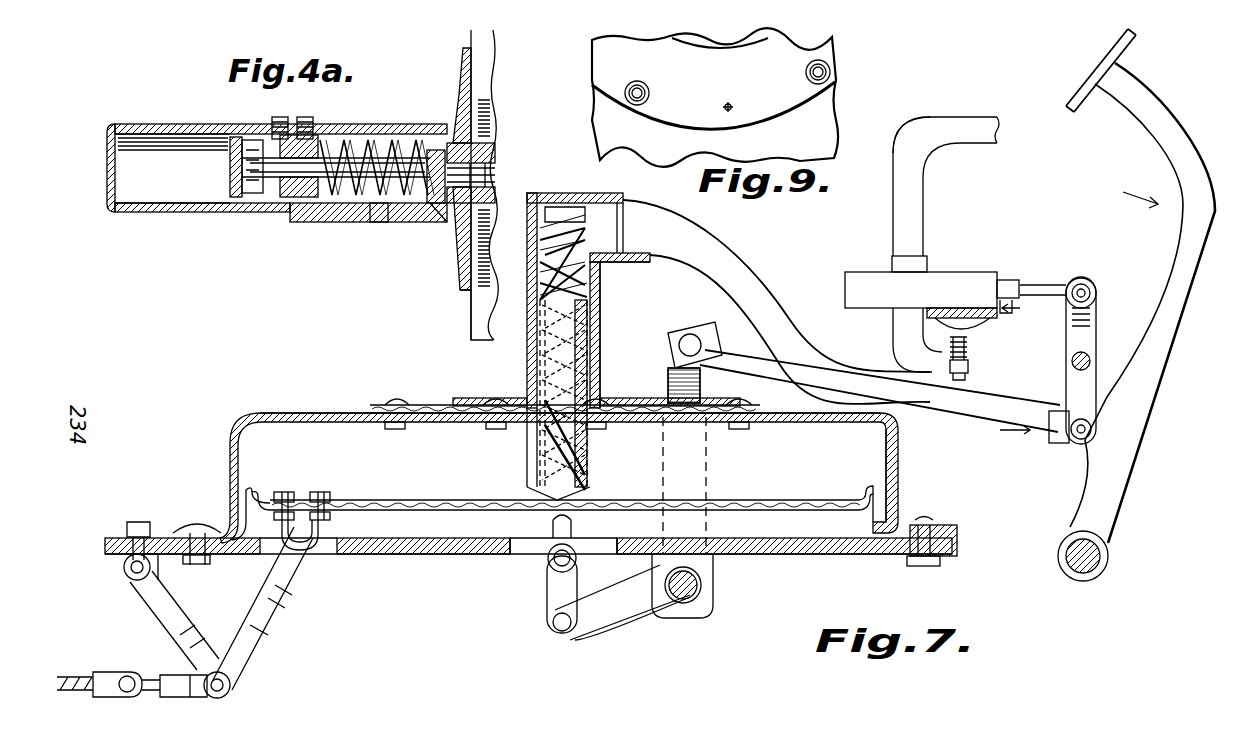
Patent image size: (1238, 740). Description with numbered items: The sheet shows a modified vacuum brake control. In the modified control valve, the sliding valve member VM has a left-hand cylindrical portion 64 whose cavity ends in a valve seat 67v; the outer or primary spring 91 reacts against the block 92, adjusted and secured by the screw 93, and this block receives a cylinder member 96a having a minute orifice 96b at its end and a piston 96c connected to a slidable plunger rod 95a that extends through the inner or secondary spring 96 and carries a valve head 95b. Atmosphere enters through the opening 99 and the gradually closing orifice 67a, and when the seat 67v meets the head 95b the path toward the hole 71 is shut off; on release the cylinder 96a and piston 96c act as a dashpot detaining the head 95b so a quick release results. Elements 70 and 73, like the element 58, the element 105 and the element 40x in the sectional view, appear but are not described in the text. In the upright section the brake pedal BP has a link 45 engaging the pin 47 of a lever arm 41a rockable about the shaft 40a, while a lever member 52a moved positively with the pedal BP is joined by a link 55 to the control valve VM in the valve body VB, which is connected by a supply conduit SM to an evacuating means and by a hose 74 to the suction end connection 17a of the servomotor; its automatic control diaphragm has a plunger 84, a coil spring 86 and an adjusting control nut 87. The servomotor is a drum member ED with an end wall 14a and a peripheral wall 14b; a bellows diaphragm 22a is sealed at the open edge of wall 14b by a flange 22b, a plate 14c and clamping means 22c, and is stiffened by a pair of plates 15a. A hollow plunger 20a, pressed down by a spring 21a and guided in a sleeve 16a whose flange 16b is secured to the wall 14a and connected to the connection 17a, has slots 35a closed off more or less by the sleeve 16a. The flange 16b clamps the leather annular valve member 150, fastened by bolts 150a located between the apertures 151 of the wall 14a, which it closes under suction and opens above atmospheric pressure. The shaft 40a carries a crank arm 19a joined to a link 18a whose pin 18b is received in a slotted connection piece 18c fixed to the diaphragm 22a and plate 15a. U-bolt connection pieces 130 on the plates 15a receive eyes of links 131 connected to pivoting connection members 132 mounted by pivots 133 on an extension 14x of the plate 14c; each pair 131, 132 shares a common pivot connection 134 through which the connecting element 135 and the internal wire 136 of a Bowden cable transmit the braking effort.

In FIG. 4A, the inner secondary spring 96 is at (340, 138).
In FIG. 4A, the cylinder member 96a is at (140, 130).
In FIG. 4A, the minute orifice 96b is at (110, 165).
In FIG. 4A, the piston 96c is at (222, 208).
In FIG. 4A, the setscrew 93 is at (282, 118).
In FIG. 4A, the hollow reaction nut 92 is at (306, 135).
In FIG. 4A, the slidable plunger rod 95a is at (285, 178).
In FIG. 4A, the first coil spring 91 is at (435, 150).
In FIG. 4A, the opening 99 is at (352, 220).
In FIG. 4A, the valve head 95b is at (392, 220).
In FIG. 4A, the valve seat 67v is at (440, 220).
In FIG. 4A, the wedge member 70 is at (462, 75).
In FIG. 4A, the supply conduit SM is at (470, 45).
In FIG. 7, the supply conduit SM is at (960, 143).
In FIG. 4A, the cylindrical portion 64 is at (493, 162).
In FIG. 4A, the orifice 67a is at (490, 178).
In FIG. 4A, the hole 71 is at (488, 190).
In FIG. 4A, the lower wedge end 73 is at (462, 272).
In FIG. 4A, the hose 74 is at (470, 320).
In FIG. 7, the hose 74 is at (783, 305).
In FIG. 9, the end wall 14a is at (818, 120).
In FIG. 7, the end wall 14a is at (330, 396).
In FIG. 9, the annular valve member 150 is at (810, 92).
In FIG. 7, the annular valve member 150 is at (436, 397).
In FIG. 9, the flange 16b is at (740, 38).
In FIG. 7, the flange 16b is at (515, 398).
In FIG. 9, the bolts 150a is at (638, 90).
In FIG. 7, the bolts 150a is at (395, 398).
In FIG. 9, the apertures 151 is at (735, 94).
In FIG. 7, the apertures 151 is at (738, 417).
In FIG. 7, the drum member ED is at (244, 418).
In FIG. 7, the peripheral wall 14b is at (240, 462).
In FIG. 7, the bellows diaphragm 22a is at (896, 470).
In FIG. 7, the flange 22b is at (952, 525).
In FIG. 7, the clamping means 22c is at (925, 566).
In FIG. 7, the plates 15a is at (440, 500).
In FIG. 7, the plate 14c is at (445, 556).
In FIG. 7, the extension 14x is at (172, 530).
In FIG. 7, the sleeve 16a is at (527, 350).
In FIG. 7, the spring 21a is at (583, 240).
In FIG. 7, the suction end connection 17a is at (603, 265).
In FIG. 7, the hollow plunger 20a is at (580, 340).
In FIG. 7, the slots 35a is at (580, 470).
In FIG. 7, the pin 47 is at (690, 334).
In FIG. 7, the lever arm 41a is at (700, 387).
In FIG. 7, the link 45 is at (960, 400).
In FIG. 7, the lever member 52a is at (1098, 325).
In FIG. 7, the link 55 is at (1065, 277).
In FIG. 7, the valve link 58 is at (1040, 285).
In FIG. 7, the sliding valve member VM is at (1006, 280).
In FIG. 7, the valve body VB is at (922, 244).
In FIG. 7, the valve bracket 105 is at (1008, 313).
In FIG. 7, the plunger 84 is at (970, 350).
In FIG. 7, the coil spring 86 is at (970, 365).
In FIG. 7, the control nut 87 is at (968, 378).
In FIG. 7, the brake pedal BP is at (1140, 115).
In FIG. 7, the mechanical connection pieces 130 is at (322, 562).
In FIG. 7, the pivot 133 is at (150, 568).
In FIG. 7, the pivoting connection member 132 is at (163, 605).
In FIG. 7, the link 131 is at (272, 612).
In FIG. 7, the common pivot connection 134 is at (232, 682).
In FIG. 7, the connecting element 135 is at (212, 700).
In FIG. 7, the internal wire 136 is at (93, 672).
In FIG. 7, the pin 18b is at (548, 562).
In FIG. 7, the slotted connection piece 18c is at (578, 558).
In FIG. 7, the link 18a is at (548, 612).
In FIG. 7, the crank arm 19a is at (628, 625).
In FIG. 7, the shaft 40a is at (705, 590).
In FIG. 7, the shaft bracket 40x is at (713, 568).